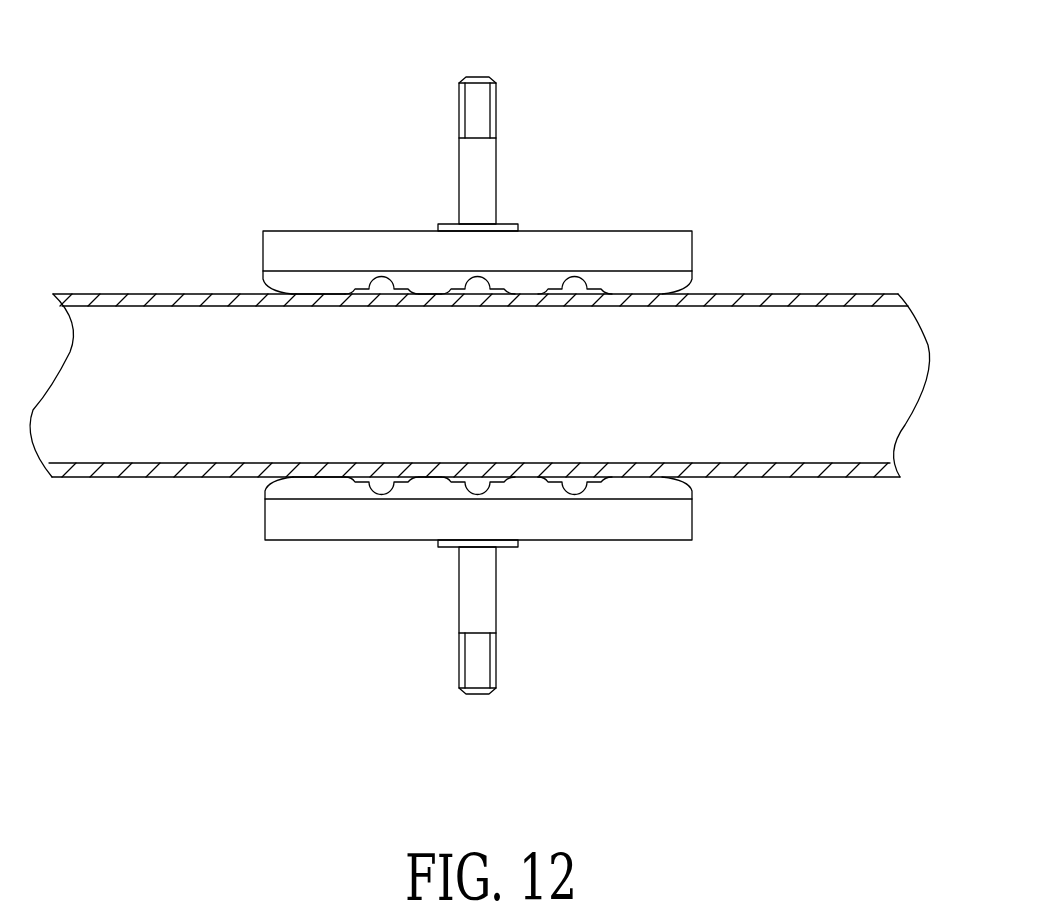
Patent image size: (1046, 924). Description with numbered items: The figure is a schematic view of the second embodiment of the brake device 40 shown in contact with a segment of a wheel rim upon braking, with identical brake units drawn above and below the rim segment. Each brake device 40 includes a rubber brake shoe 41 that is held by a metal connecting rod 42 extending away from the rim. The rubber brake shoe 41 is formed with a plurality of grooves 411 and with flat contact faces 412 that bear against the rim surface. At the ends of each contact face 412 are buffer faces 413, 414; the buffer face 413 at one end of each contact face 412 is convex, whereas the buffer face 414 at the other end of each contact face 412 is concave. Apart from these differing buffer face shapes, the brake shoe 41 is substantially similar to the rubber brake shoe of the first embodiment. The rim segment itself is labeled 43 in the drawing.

The brake device 40 is at (542, 390).
The rubber brake shoe 41 is at (673, 253).
The groove 411 is at (573, 280).
The flat contact face 412 is at (323, 303).
The buffer face 413 is at (687, 488).
The buffer face 414 is at (407, 293).
The metal connecting rod 42 is at (487, 117).
The pipe 43 is at (807, 328).